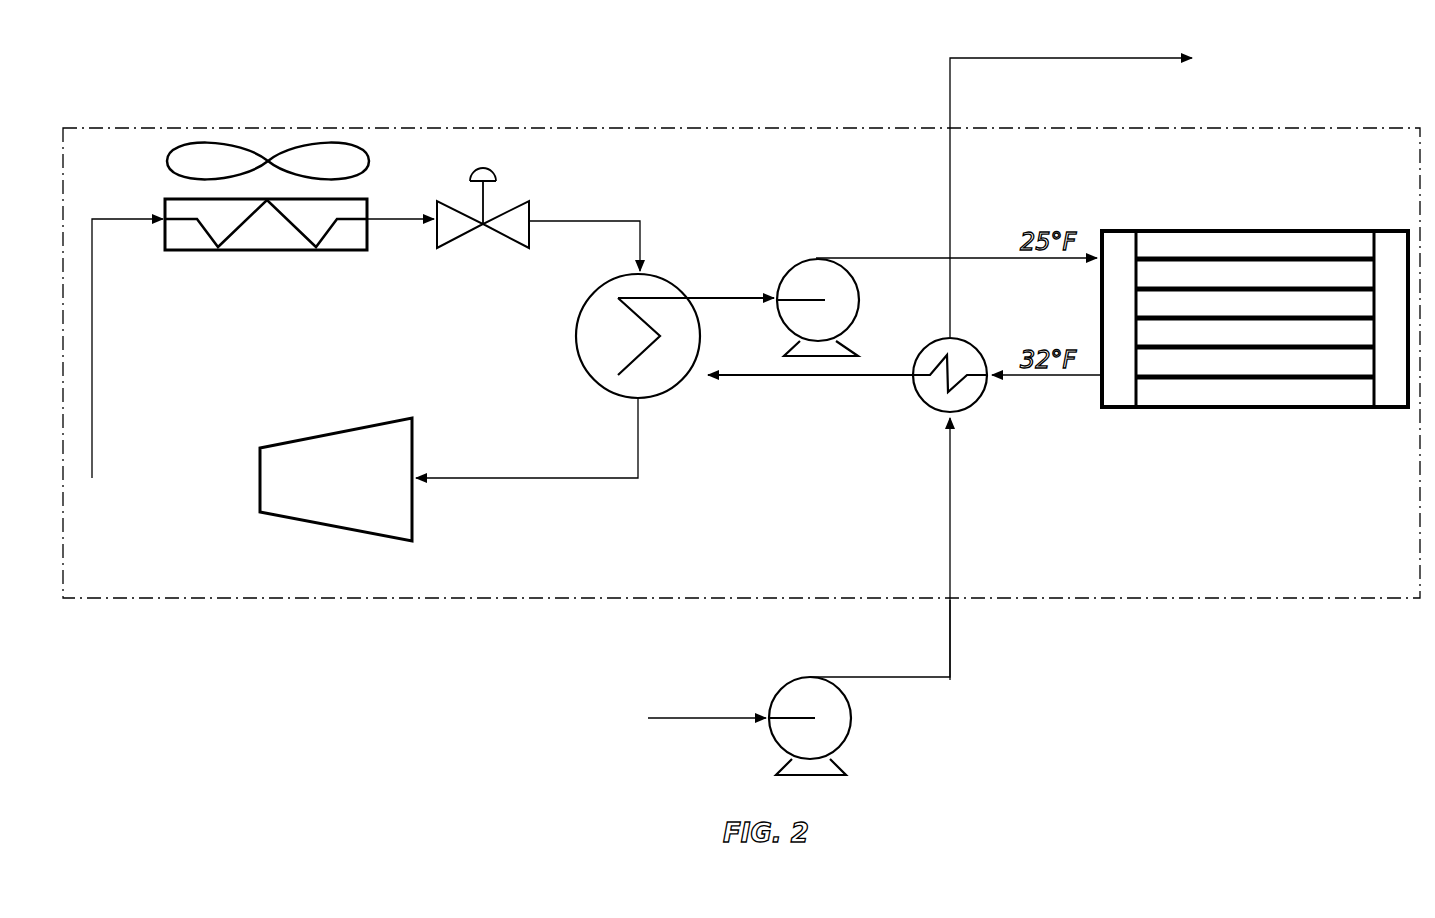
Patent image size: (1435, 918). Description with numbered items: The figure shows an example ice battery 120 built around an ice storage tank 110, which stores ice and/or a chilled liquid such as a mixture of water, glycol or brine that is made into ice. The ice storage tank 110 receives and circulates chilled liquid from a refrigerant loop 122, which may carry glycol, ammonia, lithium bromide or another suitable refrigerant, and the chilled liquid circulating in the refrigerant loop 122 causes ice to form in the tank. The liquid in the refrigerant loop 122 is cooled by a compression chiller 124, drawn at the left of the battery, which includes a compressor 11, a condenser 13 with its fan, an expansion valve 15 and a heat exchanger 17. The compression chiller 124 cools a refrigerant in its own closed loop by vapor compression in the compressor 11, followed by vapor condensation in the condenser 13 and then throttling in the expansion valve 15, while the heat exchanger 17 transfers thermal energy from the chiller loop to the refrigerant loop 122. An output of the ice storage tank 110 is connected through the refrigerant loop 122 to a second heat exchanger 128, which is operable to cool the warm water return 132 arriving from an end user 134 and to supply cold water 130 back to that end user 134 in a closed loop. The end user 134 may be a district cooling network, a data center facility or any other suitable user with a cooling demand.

The compressor 11 is at (336, 479).
The condenser 13 is at (262, 243).
The expansion valve 15 is at (461, 210).
The heat exchanger 17 is at (744, 336).
The ice storage tank 110 is at (1197, 231).
The ice battery 120 is at (741, 363).
The refrigerant loop 122 is at (792, 331).
The compression chiller 124 is at (502, 342).
The heat exchanger 128 is at (955, 460).
The cold water 130 is at (1100, 62).
The warm water return 132 is at (712, 724).
The end user 134 is at (930, 405).